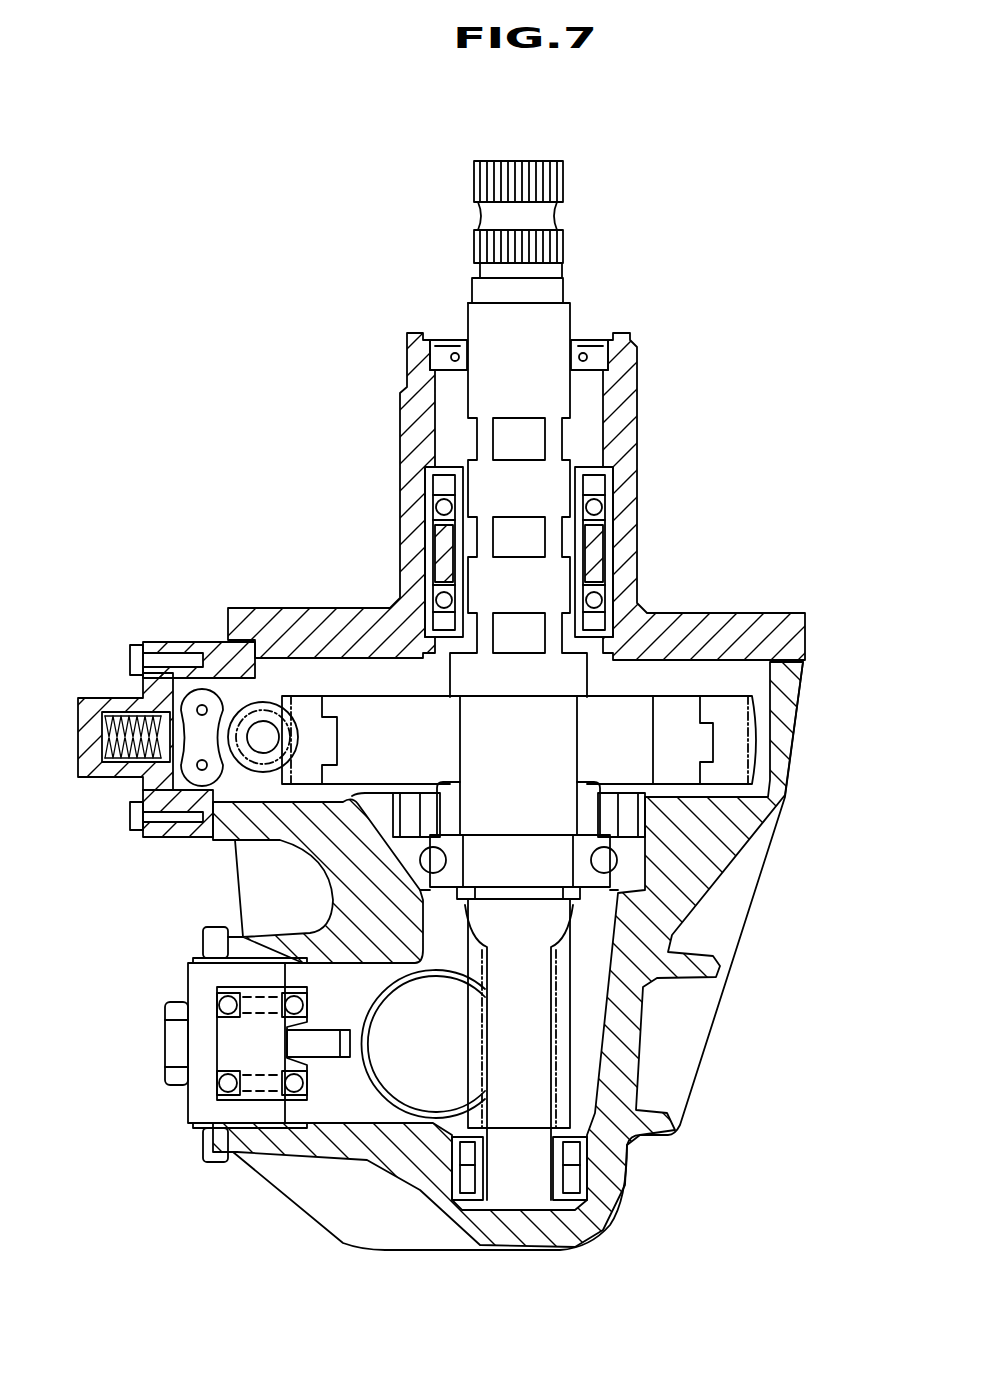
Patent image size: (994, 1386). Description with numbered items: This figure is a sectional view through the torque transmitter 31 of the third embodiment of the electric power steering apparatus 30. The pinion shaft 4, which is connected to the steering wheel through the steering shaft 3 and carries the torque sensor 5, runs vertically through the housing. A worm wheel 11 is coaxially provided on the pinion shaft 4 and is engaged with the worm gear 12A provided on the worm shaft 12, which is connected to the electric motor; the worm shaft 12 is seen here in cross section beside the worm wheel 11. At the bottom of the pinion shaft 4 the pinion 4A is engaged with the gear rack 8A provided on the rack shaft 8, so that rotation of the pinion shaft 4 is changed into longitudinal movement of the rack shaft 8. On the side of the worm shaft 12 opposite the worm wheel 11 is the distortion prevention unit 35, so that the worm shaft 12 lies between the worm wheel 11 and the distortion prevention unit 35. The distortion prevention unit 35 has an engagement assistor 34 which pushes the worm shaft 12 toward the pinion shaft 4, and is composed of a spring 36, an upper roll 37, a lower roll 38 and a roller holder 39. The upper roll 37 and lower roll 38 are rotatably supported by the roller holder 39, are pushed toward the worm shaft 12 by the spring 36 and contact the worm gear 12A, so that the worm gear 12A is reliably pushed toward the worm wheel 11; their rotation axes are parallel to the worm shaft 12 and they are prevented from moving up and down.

The steering shaft 3 is at (535, 326).
The pinion shaft 4 is at (535, 796).
The pinion 4A is at (565, 1030).
The torque sensor 5 is at (593, 558).
The rack shaft 8 is at (417, 1067).
The gear rack 8A is at (473, 1063).
The worm wheel 11 is at (743, 750).
The worm shaft 12 is at (263, 735).
The worm gear 12A is at (285, 728).
The electric power steering apparatus 30 is at (724, 236).
The torque transmitter 31 is at (698, 690).
The engagement assistor 34 is at (140, 827).
The distortion prevention unit 35 is at (125, 789).
The spring 36 is at (145, 698).
The upper roll 37 is at (186, 727).
The lower roll 38 is at (183, 790).
The roller holder 39 is at (160, 667).